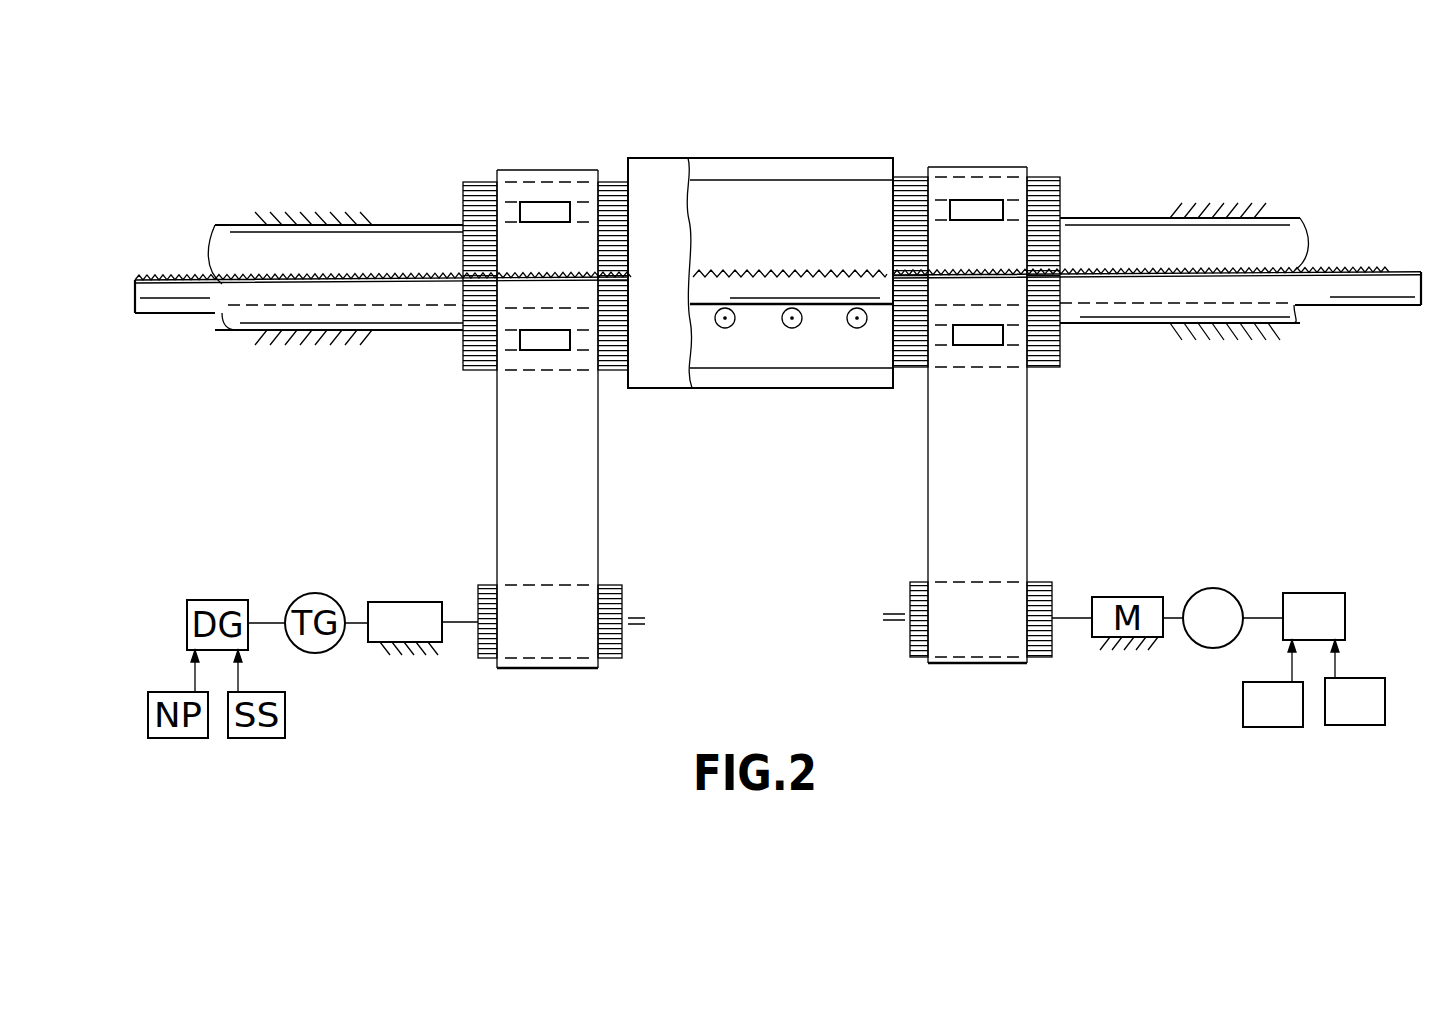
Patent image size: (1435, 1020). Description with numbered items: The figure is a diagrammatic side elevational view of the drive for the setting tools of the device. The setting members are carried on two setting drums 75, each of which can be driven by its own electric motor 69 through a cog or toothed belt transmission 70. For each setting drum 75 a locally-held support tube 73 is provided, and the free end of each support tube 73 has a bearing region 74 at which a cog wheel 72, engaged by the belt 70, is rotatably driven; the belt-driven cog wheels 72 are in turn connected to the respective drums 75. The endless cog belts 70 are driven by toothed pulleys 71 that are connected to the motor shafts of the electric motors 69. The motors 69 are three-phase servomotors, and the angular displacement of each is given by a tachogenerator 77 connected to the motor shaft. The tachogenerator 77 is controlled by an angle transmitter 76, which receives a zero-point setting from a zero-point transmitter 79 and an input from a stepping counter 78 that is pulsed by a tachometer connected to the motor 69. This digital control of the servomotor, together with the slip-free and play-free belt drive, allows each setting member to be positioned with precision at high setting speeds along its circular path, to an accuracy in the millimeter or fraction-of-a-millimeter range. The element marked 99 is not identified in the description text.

The electric motor 69 is at (380, 602).
The cog belt transmission 70 is at (515, 482).
The toothed pulley 71 is at (618, 656).
The cog wheel 72 is at (470, 358).
The support tube 73 is at (402, 250).
The bearing region 74 is at (973, 205).
The setting drum 75 is at (806, 158).
The angle transmitter 76 is at (1318, 593).
The tachogenerator 77 is at (1213, 589).
The stepping counter 78 is at (1243, 690).
The zero-point transmitter 79 is at (1385, 700).
The toothed rod 99 is at (1356, 270).